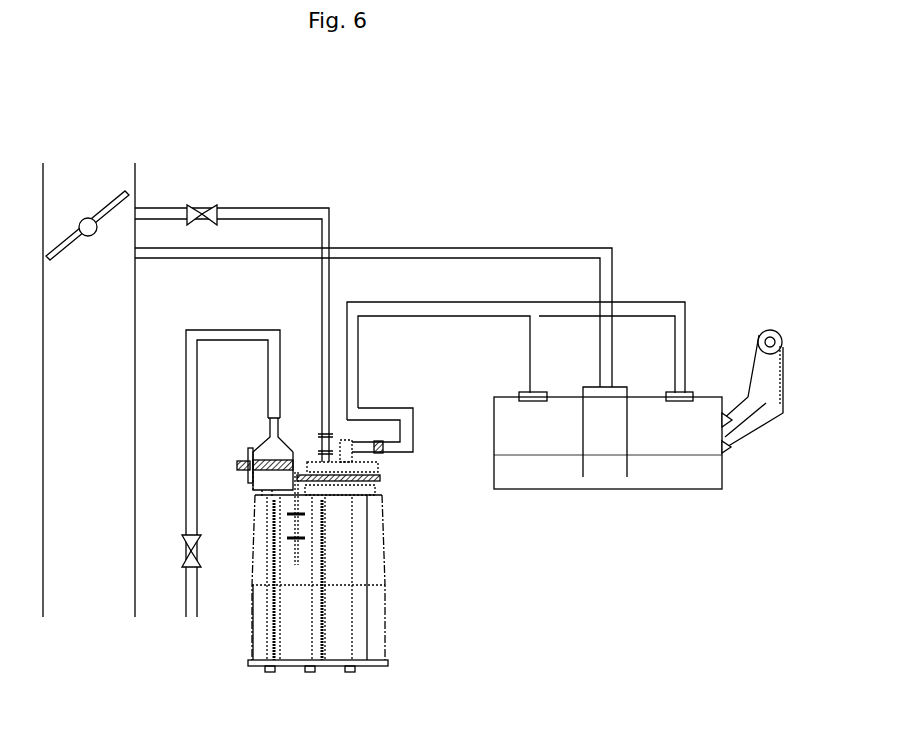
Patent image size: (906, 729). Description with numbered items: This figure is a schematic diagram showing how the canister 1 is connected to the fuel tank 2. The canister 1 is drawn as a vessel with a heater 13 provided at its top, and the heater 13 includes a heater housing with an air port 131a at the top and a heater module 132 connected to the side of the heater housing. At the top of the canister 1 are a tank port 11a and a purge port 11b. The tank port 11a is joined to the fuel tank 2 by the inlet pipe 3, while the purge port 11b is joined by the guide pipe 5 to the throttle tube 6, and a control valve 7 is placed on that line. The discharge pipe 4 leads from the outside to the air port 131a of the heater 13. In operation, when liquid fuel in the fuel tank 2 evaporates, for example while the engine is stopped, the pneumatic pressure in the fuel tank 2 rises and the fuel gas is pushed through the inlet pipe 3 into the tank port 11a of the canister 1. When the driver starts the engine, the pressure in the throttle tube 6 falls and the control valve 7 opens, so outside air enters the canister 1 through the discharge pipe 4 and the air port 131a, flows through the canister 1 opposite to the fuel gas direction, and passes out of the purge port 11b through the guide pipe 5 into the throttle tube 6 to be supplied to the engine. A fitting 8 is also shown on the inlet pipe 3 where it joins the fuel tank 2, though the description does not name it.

The canister 1 is at (388, 581).
The fuel tank 2 is at (672, 490).
The inlet pipe 3 is at (640, 300).
The discharge pipe 4 is at (240, 330).
The guide pipe 5 is at (283, 212).
The throttle tube 6 is at (137, 353).
The control valve 7 is at (193, 205).
The fitting 8 is at (690, 393).
The tank port 11a is at (383, 452).
The purge port 11b is at (323, 436).
The heater 13 is at (250, 449).
The air port 131a is at (268, 418).
The heater module 132 is at (250, 474).